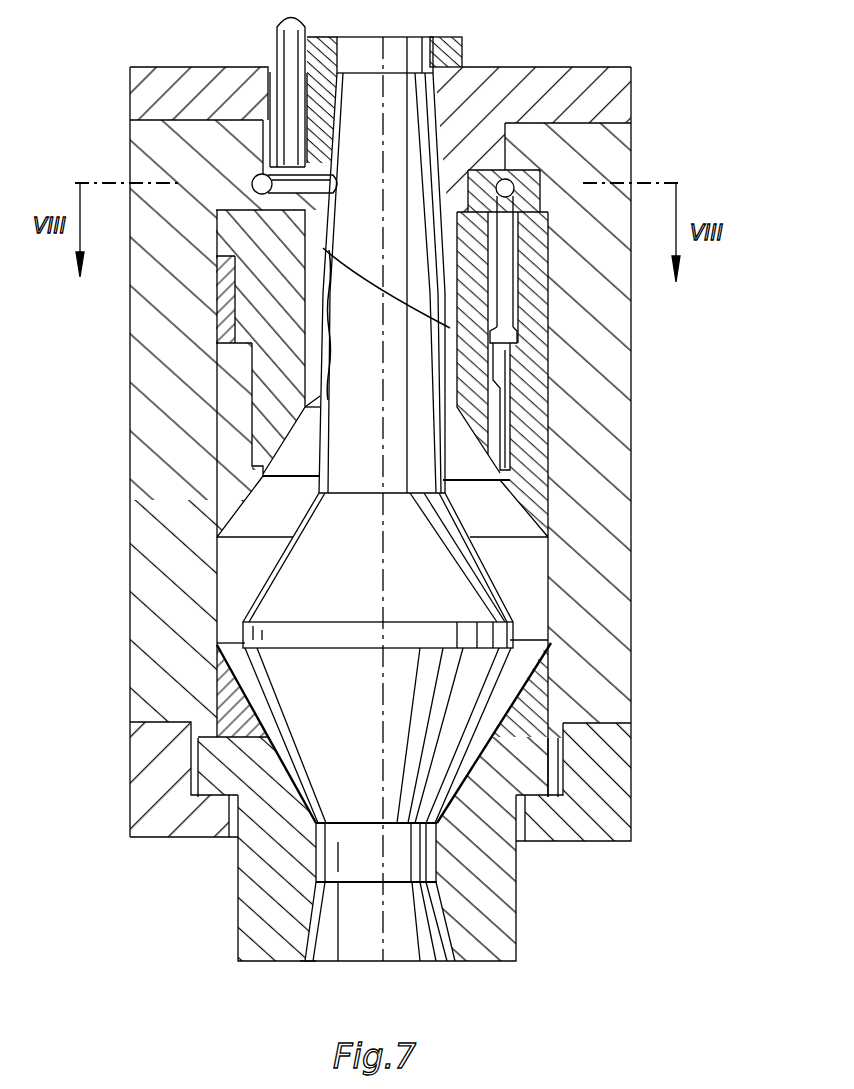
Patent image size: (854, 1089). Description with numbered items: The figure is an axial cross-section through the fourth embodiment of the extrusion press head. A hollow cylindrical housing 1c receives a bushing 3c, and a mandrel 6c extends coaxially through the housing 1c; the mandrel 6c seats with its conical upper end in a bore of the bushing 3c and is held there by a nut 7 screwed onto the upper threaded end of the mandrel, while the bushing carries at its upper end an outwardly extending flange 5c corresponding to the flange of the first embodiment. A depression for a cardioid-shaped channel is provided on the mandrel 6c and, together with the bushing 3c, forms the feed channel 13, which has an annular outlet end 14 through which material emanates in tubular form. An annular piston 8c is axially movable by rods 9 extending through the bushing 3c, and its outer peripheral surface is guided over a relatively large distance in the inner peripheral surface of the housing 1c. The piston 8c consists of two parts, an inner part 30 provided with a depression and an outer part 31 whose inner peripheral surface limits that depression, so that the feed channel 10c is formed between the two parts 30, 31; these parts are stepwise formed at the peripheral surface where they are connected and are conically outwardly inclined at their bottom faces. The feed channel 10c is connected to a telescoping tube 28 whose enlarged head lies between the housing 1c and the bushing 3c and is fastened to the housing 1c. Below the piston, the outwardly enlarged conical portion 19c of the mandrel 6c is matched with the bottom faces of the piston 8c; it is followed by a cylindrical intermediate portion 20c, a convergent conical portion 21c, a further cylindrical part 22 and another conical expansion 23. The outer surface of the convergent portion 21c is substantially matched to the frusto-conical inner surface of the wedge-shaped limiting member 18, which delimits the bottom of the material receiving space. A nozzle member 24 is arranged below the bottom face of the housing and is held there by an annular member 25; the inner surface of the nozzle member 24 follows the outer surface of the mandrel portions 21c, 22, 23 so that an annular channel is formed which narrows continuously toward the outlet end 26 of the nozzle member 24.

The housing 1c is at (607, 635).
The bushing 3c is at (482, 138).
The flange 5c is at (152, 93).
The mandrel 6c is at (395, 446).
The nut 7 is at (447, 53).
The annular piston 8c is at (255, 437).
The rods 9 is at (287, 40).
The feed channel 10c is at (507, 428).
The cardioid-shaped feed channel 13 is at (330, 310).
The annular outlet end 14 is at (314, 403).
The limiting member 18 is at (226, 698).
The outwardly enlarged conical portion 19c is at (403, 573).
The cylindrical intermediate portion 20c is at (431, 638).
The convergent conical portion 21c is at (393, 745).
The cylindrical part 22 is at (390, 864).
The conical expansion 23 is at (388, 935).
The nozzle member 24 is at (260, 898).
The annular member 25 is at (158, 783).
The outlet end 26 is at (308, 968).
The telescoping tube 28 is at (527, 190).
The inner part 30 is at (285, 282).
The outer part 31 is at (250, 345).